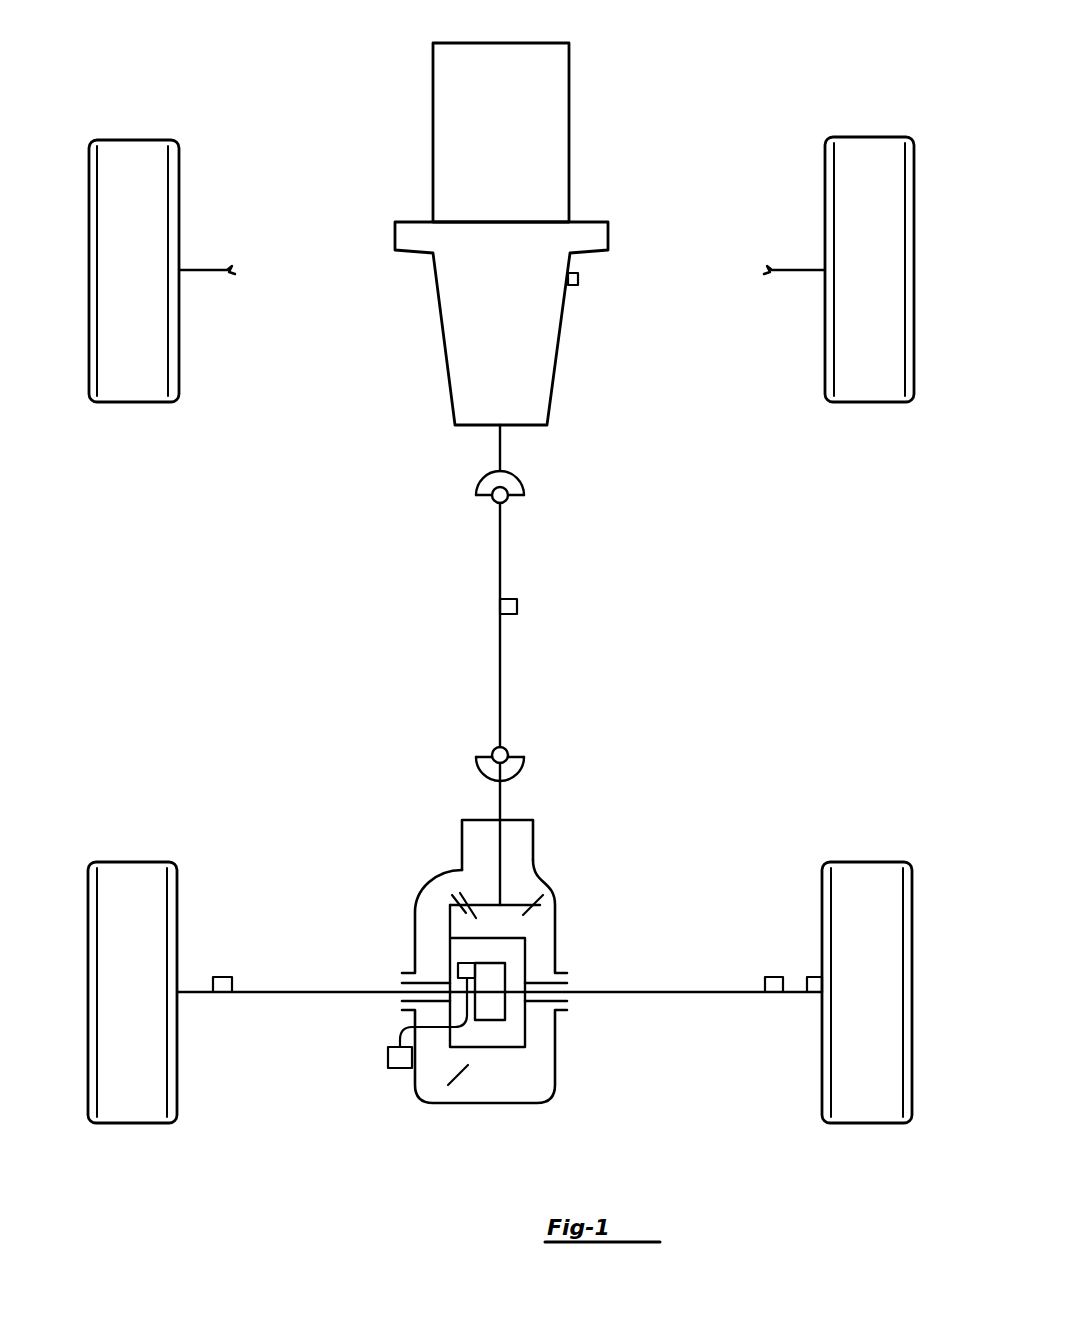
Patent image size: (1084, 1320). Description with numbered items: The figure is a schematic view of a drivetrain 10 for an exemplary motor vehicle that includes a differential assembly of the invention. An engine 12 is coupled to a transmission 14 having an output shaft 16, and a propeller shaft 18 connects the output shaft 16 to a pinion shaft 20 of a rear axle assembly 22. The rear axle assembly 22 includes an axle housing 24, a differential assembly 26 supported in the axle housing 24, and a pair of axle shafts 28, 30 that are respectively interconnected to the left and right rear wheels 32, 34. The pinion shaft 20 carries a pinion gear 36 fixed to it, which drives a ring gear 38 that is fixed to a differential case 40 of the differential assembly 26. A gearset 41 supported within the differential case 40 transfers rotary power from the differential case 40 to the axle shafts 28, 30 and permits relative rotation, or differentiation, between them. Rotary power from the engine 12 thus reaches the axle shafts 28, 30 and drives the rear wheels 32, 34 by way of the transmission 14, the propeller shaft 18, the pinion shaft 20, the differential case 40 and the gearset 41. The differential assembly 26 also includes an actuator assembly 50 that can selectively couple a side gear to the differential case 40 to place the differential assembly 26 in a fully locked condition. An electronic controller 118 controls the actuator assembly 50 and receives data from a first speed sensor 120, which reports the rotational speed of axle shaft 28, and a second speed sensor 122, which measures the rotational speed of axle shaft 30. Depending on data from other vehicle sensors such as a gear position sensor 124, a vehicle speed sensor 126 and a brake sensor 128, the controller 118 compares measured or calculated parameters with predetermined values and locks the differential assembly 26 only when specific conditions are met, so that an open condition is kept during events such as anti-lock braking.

The drivetrain 10 is at (296, 48).
The engine 12 is at (553, 145).
The transmission 14 is at (560, 338).
The output shaft 16 is at (500, 448).
The propeller shaft 18 is at (500, 648).
The pinion shaft 20 is at (500, 836).
The rear axle assembly 22 is at (433, 852).
The axle housing 24 is at (517, 818).
The differential assembly 26 is at (430, 912).
The axle shaft 28 is at (270, 1008).
The axle shaft 30 is at (672, 1008).
The rear wheel 32 is at (138, 862).
The rear wheel 34 is at (867, 862).
The pinion gear 36 is at (537, 903).
The ring gear 38 is at (458, 1075).
The differential case 40 is at (498, 1047).
The gearset 41 is at (497, 972).
The actuator assembly 50 is at (458, 970).
The electronic controller 118 is at (388, 1065).
The first speed sensor 120 is at (223, 977).
The second speed sensor 122 is at (774, 977).
The gear position sensor 124 is at (578, 279).
The vehicle speed sensor 126 is at (517, 605).
The brake sensor 128 is at (815, 977).